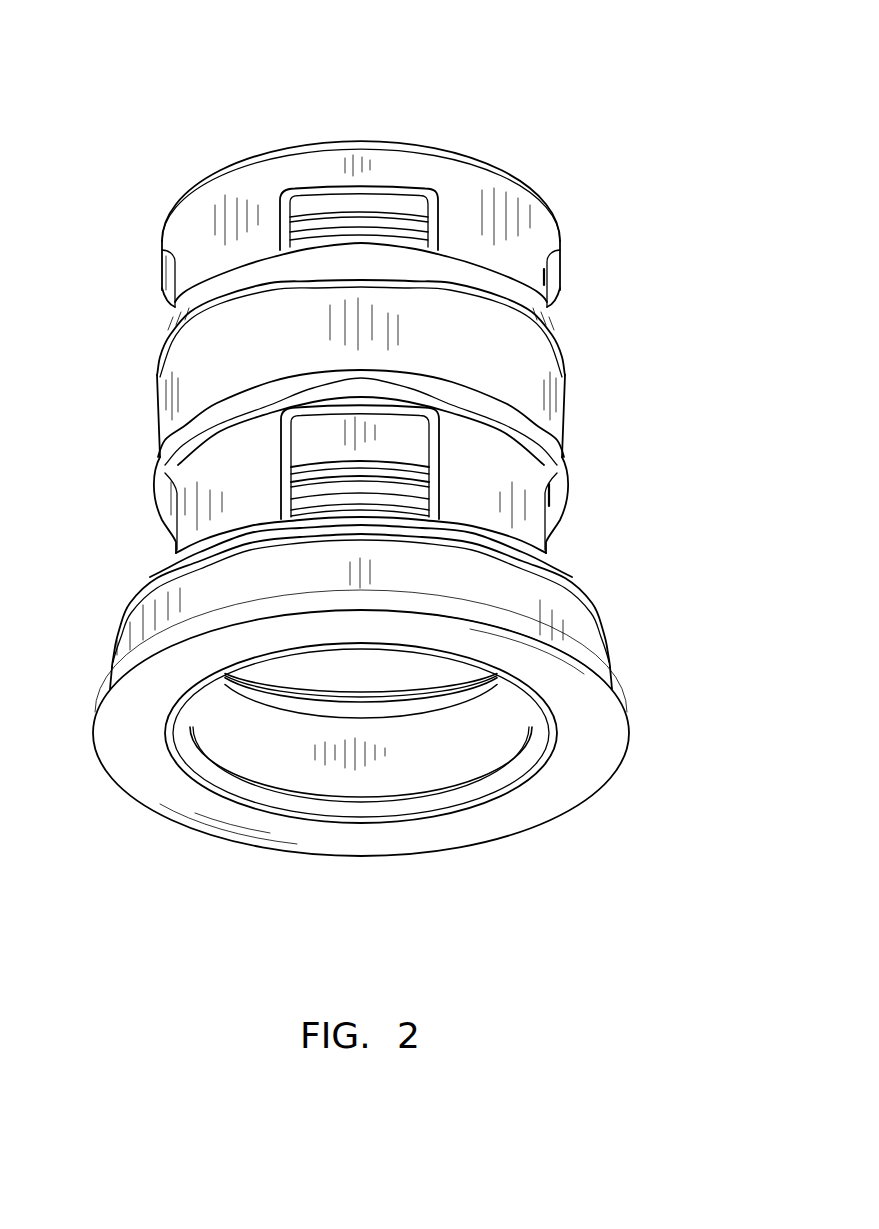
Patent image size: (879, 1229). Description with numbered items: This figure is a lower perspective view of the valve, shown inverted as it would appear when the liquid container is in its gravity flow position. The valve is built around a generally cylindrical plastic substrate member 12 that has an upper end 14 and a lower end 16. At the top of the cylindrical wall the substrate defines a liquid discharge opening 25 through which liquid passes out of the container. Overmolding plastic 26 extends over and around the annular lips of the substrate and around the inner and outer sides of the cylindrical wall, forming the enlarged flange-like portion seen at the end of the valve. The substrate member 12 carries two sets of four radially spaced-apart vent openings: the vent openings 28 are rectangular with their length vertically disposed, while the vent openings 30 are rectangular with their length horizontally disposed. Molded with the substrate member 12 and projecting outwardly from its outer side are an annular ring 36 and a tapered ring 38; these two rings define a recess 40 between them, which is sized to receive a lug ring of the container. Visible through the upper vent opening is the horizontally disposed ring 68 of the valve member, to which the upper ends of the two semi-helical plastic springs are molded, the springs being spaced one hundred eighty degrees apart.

The substrate member 12 is at (376, 493).
The upper end 14 is at (361, 126).
The lower end 16 is at (373, 872).
The liquid discharge opening 25 is at (493, 740).
The overmolding plastic 26 is at (562, 612).
The vent openings 28 is at (434, 457).
The vent openings 30 is at (292, 197).
The annular ring 36 is at (562, 457).
The tapered ring 38 is at (550, 326).
The recess 40 is at (464, 346).
The horizontally disposed ring 68 is at (383, 198).